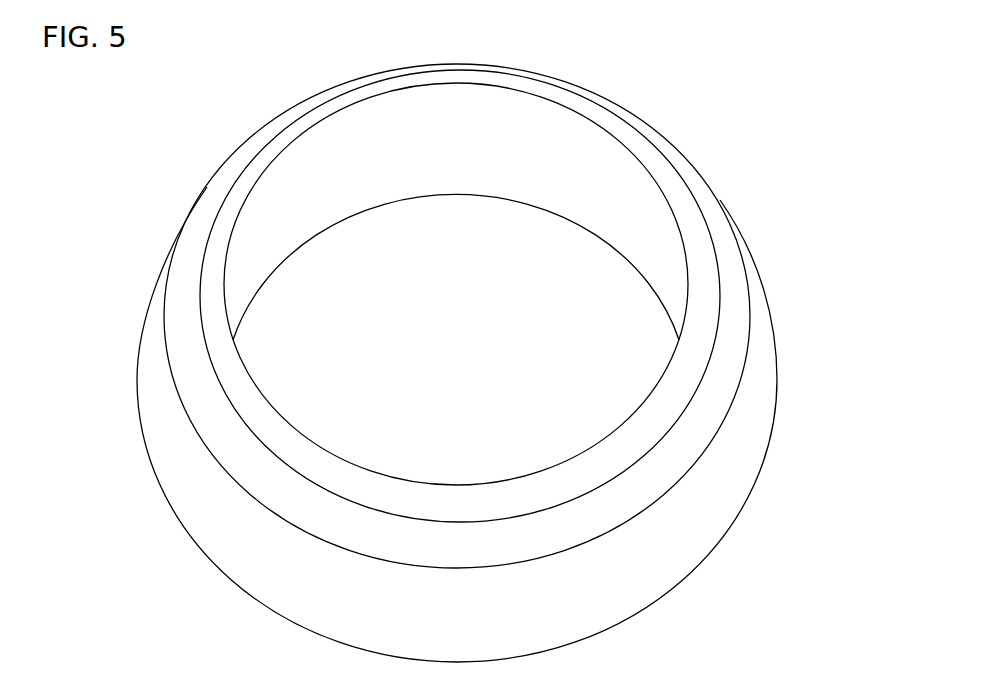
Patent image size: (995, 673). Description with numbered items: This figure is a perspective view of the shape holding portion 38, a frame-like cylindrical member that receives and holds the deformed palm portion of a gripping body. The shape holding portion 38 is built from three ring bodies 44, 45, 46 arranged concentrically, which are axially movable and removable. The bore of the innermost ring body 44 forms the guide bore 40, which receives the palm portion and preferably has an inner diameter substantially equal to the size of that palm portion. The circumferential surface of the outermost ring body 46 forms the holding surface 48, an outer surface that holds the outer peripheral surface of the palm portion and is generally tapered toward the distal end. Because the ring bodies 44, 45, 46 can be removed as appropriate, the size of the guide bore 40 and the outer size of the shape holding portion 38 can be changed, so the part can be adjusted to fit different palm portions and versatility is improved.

The shape holding portion 38 is at (760, 140).
The guide bore 40 is at (553, 165).
The ring body 44 is at (707, 308).
The ring body 45 is at (730, 343).
The ring body 46 is at (747, 428).
The holding surface 48 is at (688, 553).